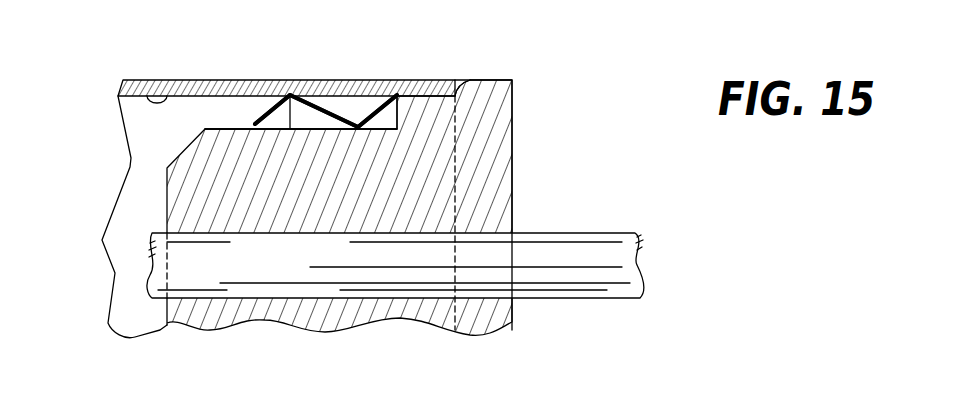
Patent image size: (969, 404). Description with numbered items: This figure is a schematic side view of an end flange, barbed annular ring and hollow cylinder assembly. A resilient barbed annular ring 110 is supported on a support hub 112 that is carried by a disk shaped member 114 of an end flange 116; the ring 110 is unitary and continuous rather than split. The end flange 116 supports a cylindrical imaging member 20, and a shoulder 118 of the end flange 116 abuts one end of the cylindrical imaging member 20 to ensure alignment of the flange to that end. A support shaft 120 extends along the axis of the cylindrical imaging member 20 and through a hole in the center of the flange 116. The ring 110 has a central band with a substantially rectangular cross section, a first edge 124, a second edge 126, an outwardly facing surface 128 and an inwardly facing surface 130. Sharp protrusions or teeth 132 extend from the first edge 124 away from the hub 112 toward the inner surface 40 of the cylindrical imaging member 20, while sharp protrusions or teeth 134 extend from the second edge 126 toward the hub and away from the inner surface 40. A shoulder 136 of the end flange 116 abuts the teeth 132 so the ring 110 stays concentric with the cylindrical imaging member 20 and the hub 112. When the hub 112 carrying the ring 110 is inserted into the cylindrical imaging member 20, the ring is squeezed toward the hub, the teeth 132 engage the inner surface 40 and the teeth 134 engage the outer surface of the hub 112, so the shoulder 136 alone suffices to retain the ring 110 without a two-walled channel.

The cylindrical imaging member 20 is at (156, 79).
The inner surface 40 is at (169, 80).
The resilient barbed annular ring 110 is at (352, 100).
The support hub 112 is at (167, 202).
The disk shaped member 114 is at (490, 80).
The end flange 116 is at (540, 134).
The shoulder 118 is at (470, 80).
The support shaft 120 is at (580, 233).
The first edge 124 is at (376, 100).
The second edge 126 is at (289, 94).
The outwardly facing surface 128 is at (316, 115).
The inwardly facing surface 130 is at (290, 131).
The sharp protrusions or teeth 132 is at (378, 100).
The sharp protrusions or teeth 134 is at (262, 110).
The shoulder 136 is at (392, 132).